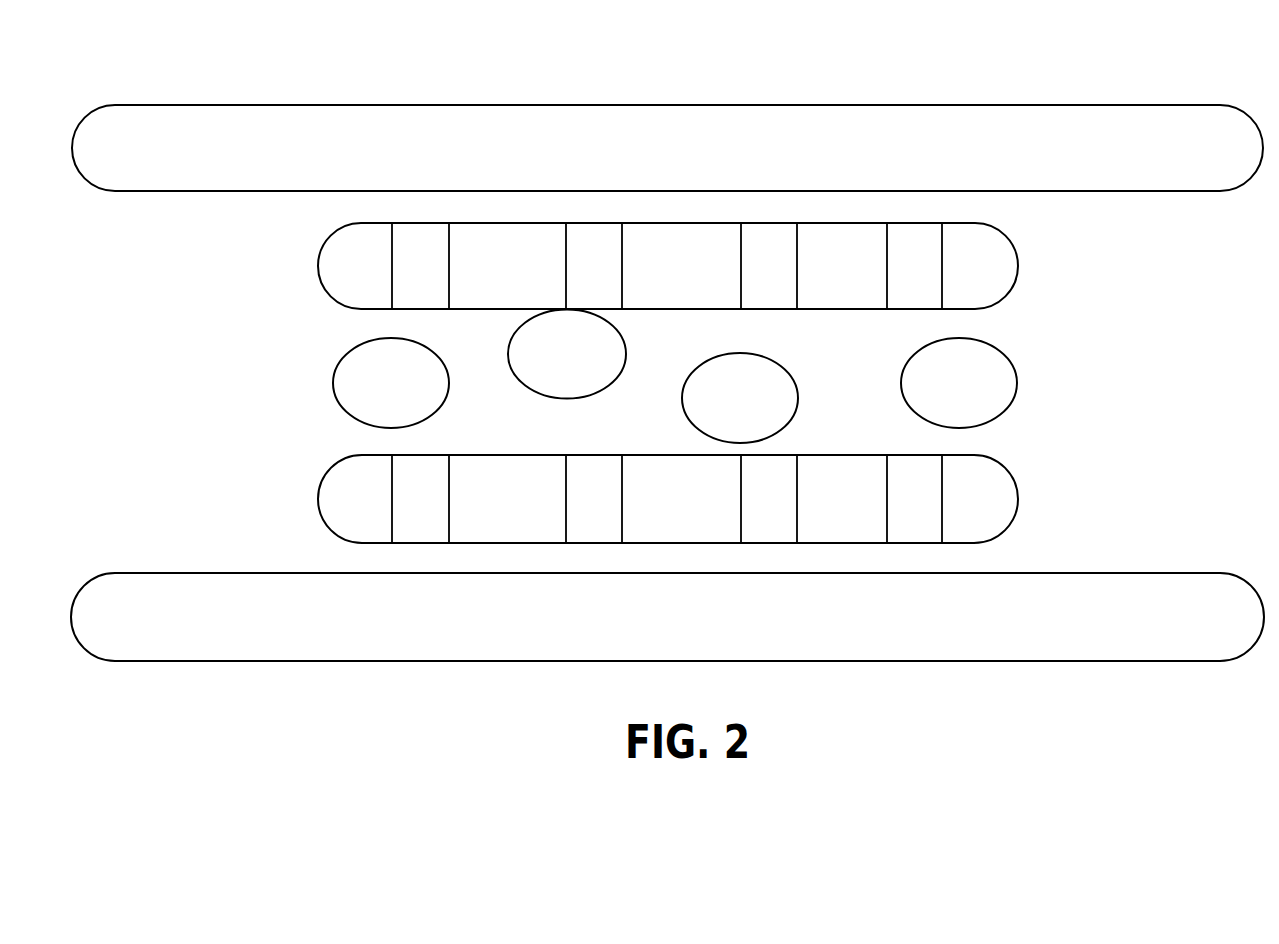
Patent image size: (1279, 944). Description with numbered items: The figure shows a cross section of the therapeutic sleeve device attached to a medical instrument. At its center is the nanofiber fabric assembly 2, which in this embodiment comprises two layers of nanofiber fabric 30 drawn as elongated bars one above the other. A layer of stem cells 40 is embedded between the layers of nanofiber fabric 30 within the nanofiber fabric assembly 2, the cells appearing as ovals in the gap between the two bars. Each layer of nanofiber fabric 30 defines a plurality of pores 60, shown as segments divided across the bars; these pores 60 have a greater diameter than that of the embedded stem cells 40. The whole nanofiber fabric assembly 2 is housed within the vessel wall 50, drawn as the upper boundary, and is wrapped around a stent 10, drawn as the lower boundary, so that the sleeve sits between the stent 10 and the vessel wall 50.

The nanofiber fabric assembly 2 is at (248, 222).
The stent 10 is at (1158, 573).
The nanofiber fabric 30 is at (1018, 263).
The stem cells 40 is at (1017, 383).
The vessel wall 50 is at (1158, 105).
The pores 60 is at (942, 309).